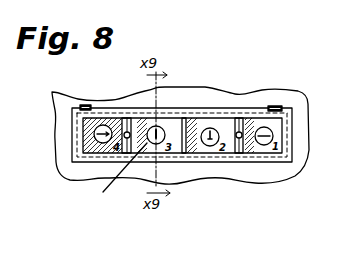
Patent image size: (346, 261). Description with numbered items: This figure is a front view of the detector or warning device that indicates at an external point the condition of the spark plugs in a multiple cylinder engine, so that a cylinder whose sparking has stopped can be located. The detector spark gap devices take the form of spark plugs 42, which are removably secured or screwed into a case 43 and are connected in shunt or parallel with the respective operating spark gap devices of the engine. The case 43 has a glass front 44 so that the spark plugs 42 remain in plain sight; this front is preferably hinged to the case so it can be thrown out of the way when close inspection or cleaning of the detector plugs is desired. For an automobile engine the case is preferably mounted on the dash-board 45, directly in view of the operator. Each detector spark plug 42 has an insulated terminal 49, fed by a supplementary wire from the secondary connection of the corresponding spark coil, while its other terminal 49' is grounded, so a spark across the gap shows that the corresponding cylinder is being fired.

The detector spark plug 42 is at (112, 132).
The case 43 is at (201, 108).
The glass front 44 is at (117, 122).
The dash-board 45 is at (273, 97).
The insulated terminal 49 is at (231, 162).
The grounded terminal 49' is at (203, 167).